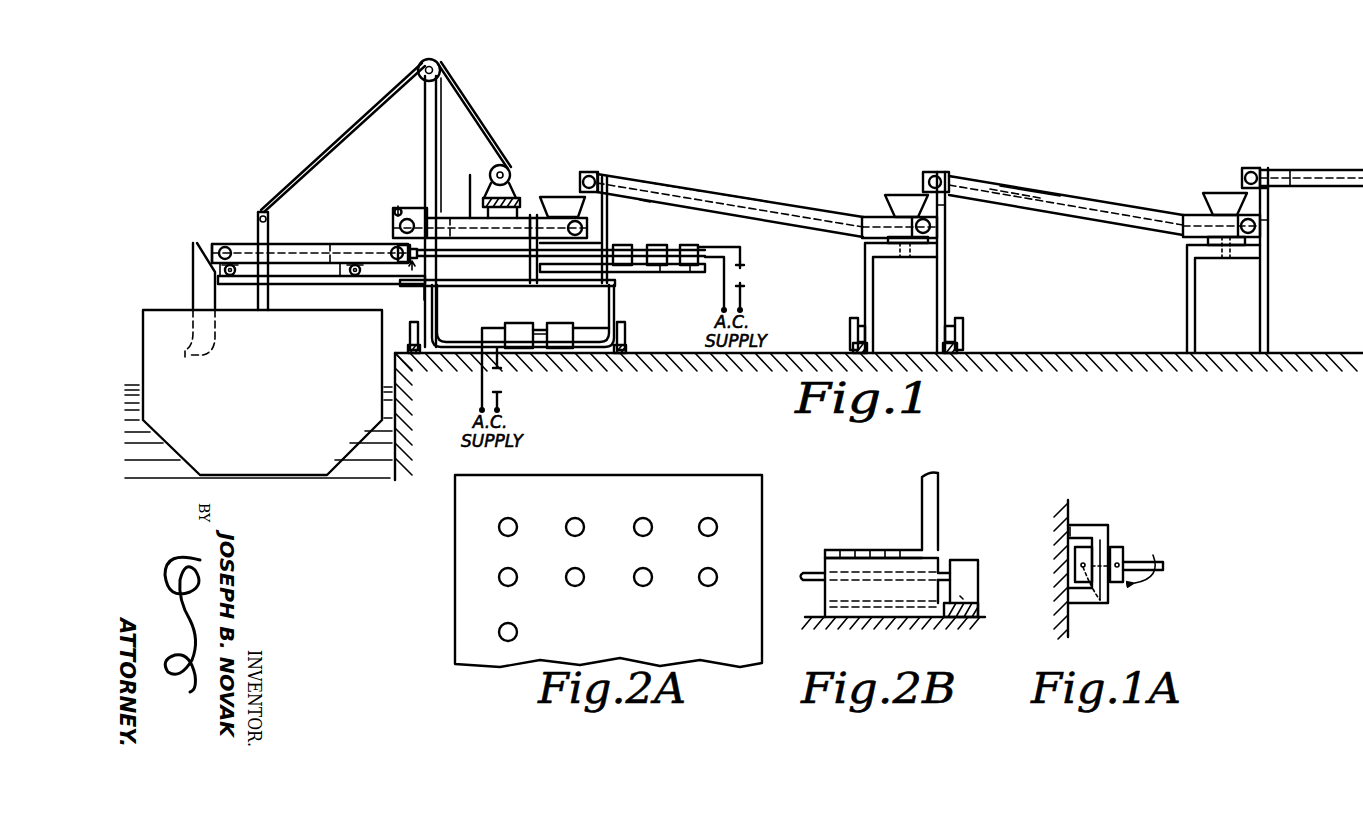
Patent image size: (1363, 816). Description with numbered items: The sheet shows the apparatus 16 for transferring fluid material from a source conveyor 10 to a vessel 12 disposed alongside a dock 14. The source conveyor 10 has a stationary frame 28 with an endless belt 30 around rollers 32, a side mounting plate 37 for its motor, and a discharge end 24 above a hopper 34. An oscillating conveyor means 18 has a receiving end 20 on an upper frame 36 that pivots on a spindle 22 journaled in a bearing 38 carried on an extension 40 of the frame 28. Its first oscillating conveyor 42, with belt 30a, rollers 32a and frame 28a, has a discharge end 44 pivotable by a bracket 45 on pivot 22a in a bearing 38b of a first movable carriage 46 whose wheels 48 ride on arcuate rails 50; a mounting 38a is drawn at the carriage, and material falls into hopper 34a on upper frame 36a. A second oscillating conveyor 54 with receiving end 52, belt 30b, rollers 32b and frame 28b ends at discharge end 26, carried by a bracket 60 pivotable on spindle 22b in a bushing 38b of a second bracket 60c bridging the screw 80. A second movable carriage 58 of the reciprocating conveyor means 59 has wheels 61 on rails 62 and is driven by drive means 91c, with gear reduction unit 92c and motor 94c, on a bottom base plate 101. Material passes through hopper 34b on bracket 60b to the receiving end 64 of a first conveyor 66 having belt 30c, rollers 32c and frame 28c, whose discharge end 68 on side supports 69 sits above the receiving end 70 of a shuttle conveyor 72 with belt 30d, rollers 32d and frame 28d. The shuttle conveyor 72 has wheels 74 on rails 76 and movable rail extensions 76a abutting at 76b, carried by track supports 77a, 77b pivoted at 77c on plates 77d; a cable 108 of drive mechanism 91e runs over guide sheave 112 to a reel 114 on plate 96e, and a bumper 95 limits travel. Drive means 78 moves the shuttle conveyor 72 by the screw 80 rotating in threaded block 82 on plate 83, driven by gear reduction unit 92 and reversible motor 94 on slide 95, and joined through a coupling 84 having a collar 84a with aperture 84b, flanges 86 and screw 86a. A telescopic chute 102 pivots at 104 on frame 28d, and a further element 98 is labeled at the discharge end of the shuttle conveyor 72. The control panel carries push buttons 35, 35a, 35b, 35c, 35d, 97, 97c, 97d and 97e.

In FIG. 1, the source conveyor 10 is at (1296, 166).
In FIG. 1, the vessel 12 is at (252, 367).
In FIG. 1, the dock 14 is at (794, 352).
In FIG. 1, the apparatus 16 is at (725, 171).
In FIG. 1, the oscillating conveyor means 18 is at (1033, 173).
In FIG. 1, the receiving end 20 is at (1266, 220).
In FIG. 1, the pivot or spindle 22 is at (1226, 262).
In FIG. 1, the pivot 22a is at (908, 260).
In FIG. 2B, the spindle 22b is at (868, 551).
In FIG. 1, the discharge end 24 is at (1252, 166).
In FIG. 1, the discharge end 26 is at (602, 176).
In FIG. 1, the stationary frame 28 is at (1269, 308).
In FIG. 1, the frame 28a is at (1076, 218).
In FIG. 1, the frame 28b is at (760, 221).
In FIG. 1, the frame 28c is at (448, 252).
In FIG. 1, the frame 28d is at (300, 252).
In FIG. 1, the endless belt 30 is at (1322, 170).
In FIG. 1, the endless belt 30a is at (1048, 192).
In FIG. 1, the endless belt 30b is at (691, 187).
In FIG. 1, the endless conveyor belt 30c is at (466, 216).
In FIG. 1, the endless belt 30d is at (345, 242).
In FIG. 1, the rollers 32 is at (1243, 176).
In FIG. 1, the rollers 32a is at (929, 180).
In FIG. 1, the rollers 32b is at (583, 183).
In FIG. 1, the rollers 32c is at (400, 209).
In FIG. 1, the rollers 32d is at (219, 244).
In FIG. 1, the hopper 34 is at (1212, 199).
In FIG. 1, the hopper 34a is at (898, 203).
In FIG. 1, the hopper 34b is at (568, 199).
In FIG. 2A, the push button 35 is at (514, 520).
In FIG. 2A, the push button 35a is at (581, 520).
In FIG. 2A, the push button 35b is at (649, 520).
In FIG. 2A, the push button 35c is at (714, 520).
In FIG. 2A, the push button 35d is at (514, 570).
In FIG. 1, the upper frame 36 is at (1262, 246).
In FIG. 1, the upper frame 36a is at (929, 243).
In FIG. 1, the side mounting plate 37 is at (1269, 196).
In FIG. 1, the bearing 38 is at (1190, 250).
In FIG. 1, the base plate 38a is at (867, 251).
In FIG. 2B, the bearing 38b is at (830, 550).
In FIG. 1, the extension 40 is at (1188, 300).
In FIG. 1, the first oscillating conveyor 42 is at (1119, 203).
In FIG. 1, the discharge end 44 is at (940, 170).
In FIG. 1, the bracket 45 is at (951, 178).
In FIG. 1, the first movable carriage 46 is at (946, 292).
In FIG. 1, the wheels 48 is at (850, 326).
In FIG. 1, the arcuate rails 50 is at (868, 348).
In FIG. 1, the receiving end 52 is at (949, 210).
In FIG. 1, the second oscillating conveyor 54 is at (782, 202).
In FIG. 1, the second movable carriage 58 is at (616, 313).
In FIG. 1, the reciprocating conveyor means 59 is at (528, 290).
In FIG. 1, the bracket 60 is at (608, 233).
In FIG. 2B, the bracket 60 is at (939, 497).
In FIG. 1, the bracket 60b is at (536, 286).
In FIG. 2B, the second bracket 60c is at (830, 598).
In FIG. 1, the wheels 61 is at (410, 333).
In FIG. 1, the rails 62 is at (418, 354).
In FIG. 1, the receiving end 64 is at (645, 202).
In FIG. 1, the first conveyor 66 is at (471, 193).
In FIG. 1, the discharge end 68 is at (395, 204).
In FIG. 1, the side supports 69 is at (437, 135).
In FIG. 1, the receiving end 70 is at (383, 238).
In FIG. 1, the shuttle conveyor 72 is at (322, 236).
In FIG. 1A, the shuttle conveyor 72 is at (1065, 508).
In FIG. 1, the wheels 74 is at (232, 277).
In FIG. 1, the rails 76 is at (473, 287).
In FIG. 2B, the rails 76 is at (890, 620).
In FIG. 1, the movable rail extensions 76a is at (280, 278).
In FIG. 1, the abutment 76b is at (426, 288).
In FIG. 1, the track support 77a is at (257, 211).
In FIG. 1, the track support 77b is at (392, 222).
In FIG. 1, the pivot 77c is at (394, 208).
In FIG. 1, the plates 77d is at (426, 210).
In FIG. 1, the drive means 78 is at (689, 242).
In FIG. 1, the screw 80 is at (490, 256).
In FIG. 2B, the screw 80 is at (818, 573).
In FIG. 1A, the screw 80 is at (1163, 566).
In FIG. 1, the threaded block 82 is at (651, 247).
In FIG. 2B, the threaded block 82 is at (968, 562).
In FIG. 1, the plate 83 is at (690, 273).
In FIG. 2B, the plate 83 is at (979, 613).
In FIG. 1, the coupling 84 is at (405, 266).
In FIG. 1A, the coupling 84 is at (1115, 525).
In FIG. 1A, the collar 84a is at (1075, 524).
In FIG. 1A, the aperture 84b is at (1108, 546).
In FIG. 1A, the flanges 86 is at (1124, 550).
In FIG. 1A, the screw 86a is at (1117, 583).
In FIG. 1, the drive means 91c is at (550, 330).
In FIG. 1, the drive mechanism 91e is at (379, 99).
In FIG. 1, the gear reduction unit 92 is at (661, 268).
In FIG. 1, the gear reduction unit 92c is at (522, 350).
In FIG. 1, the reversible motor 94 is at (700, 247).
In FIG. 1, the motor 94c is at (561, 350).
In FIG. 1, the bumper 95 is at (222, 270).
In FIG. 2B, the bumper 95 is at (962, 597).
In FIG. 1, the plate 96e is at (523, 196).
In FIG. 1, the push button 97 is at (748, 270).
In FIG. 2A, the push button 97 is at (581, 570).
In FIG. 1, the push button 97c is at (501, 394).
In FIG. 2A, the push button 97c is at (649, 570).
In FIG. 2A, the push button 97d is at (714, 570).
In FIG. 2A, the push button 97e is at (514, 625).
In FIG. 1, the discharge conveyor 98 is at (210, 238).
In FIG. 1, the bottom base plate 101 is at (471, 322).
In FIG. 1, the telescopic chute 102 is at (192, 297).
In FIG. 1, the pivot 104 is at (193, 254).
In FIG. 1, the cable 108 is at (330, 148).
In FIG. 1, the guide sheave 112 is at (441, 66).
In FIG. 1, the reel 114 is at (511, 166).